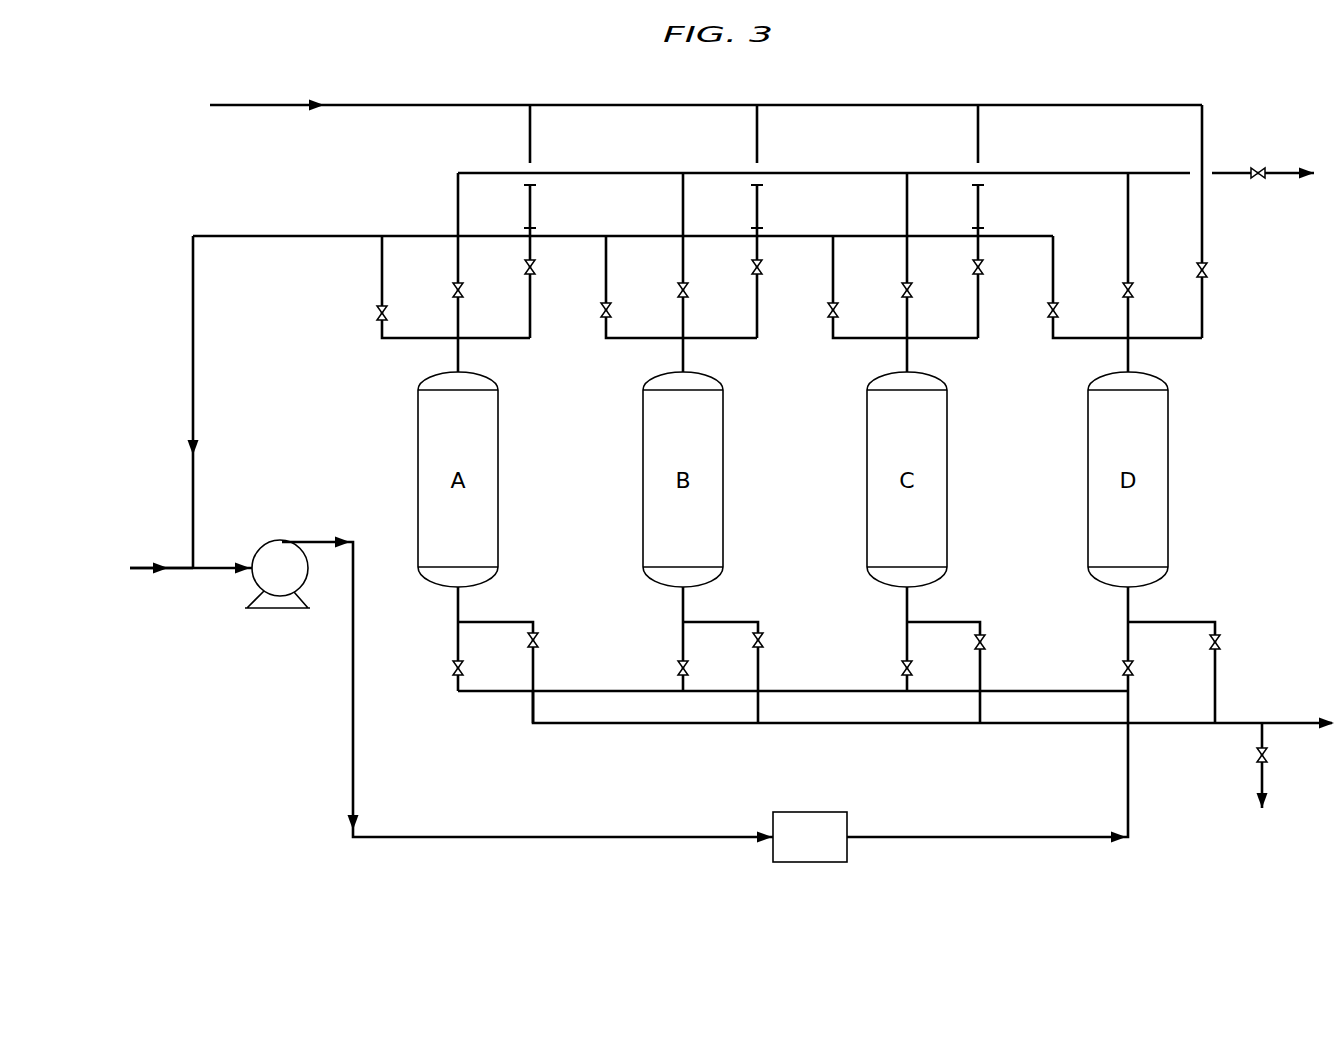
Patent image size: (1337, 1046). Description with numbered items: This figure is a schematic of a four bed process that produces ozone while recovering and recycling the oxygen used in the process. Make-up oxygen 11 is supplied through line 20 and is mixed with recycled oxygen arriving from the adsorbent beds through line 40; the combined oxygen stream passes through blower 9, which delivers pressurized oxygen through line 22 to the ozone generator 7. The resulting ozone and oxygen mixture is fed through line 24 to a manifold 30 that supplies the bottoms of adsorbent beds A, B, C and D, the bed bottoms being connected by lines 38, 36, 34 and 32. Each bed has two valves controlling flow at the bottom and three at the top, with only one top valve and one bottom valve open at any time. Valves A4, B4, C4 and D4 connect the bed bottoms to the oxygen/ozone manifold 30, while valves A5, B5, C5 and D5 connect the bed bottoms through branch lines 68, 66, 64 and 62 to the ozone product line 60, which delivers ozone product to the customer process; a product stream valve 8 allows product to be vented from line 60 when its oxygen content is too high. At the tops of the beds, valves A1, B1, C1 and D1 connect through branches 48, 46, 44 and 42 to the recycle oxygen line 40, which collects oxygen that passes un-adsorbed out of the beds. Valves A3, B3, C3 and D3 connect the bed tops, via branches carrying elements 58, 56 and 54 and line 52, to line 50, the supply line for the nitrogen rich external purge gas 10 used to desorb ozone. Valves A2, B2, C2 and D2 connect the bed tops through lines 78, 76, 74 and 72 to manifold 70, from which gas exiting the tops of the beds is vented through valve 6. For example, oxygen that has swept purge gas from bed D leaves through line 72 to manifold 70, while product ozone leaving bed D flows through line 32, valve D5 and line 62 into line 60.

The external purge gas 10 is at (335, 87).
The purge gas supply line 50 is at (880, 104).
The line 52 is at (1204, 213).
The manifold 70 is at (1073, 170).
The vent valve 6 is at (1264, 170).
The vent line vessel A 78 is at (457, 205).
The vent line vessel B 76 is at (682, 205).
The vent line vessel C 74 is at (906, 205).
The line 72 is at (1127, 205).
The purge restriction vessel A 58 is at (533, 210).
The purge restriction vessel B 56 is at (760, 210).
The purge restriction vessel C 54 is at (981, 210).
The recycle oxygen line 40 is at (192, 278).
The feed line vessel A 48 is at (381, 263).
The feed line vessel B 46 is at (607, 258).
The feed line vessel C 44 is at (834, 258).
The feed line vessel D 42 is at (1054, 248).
The valve A1 is at (400, 313).
The valve A2 is at (476, 304).
The valve A3 is at (550, 287).
The valve B1 is at (625, 310).
The valve B2 is at (701, 304).
The valve B3 is at (776, 287).
The valve C1 is at (851, 310).
The valve C2 is at (925, 304).
The valve C3 is at (996, 287).
The valve D1 is at (1071, 310).
The valve D2 is at (1147, 304).
The valve D3 is at (1220, 270).
The bottom line vessel A 38 is at (456, 607).
The bottom line vessel B 36 is at (681, 607).
The bottom line vessel C 34 is at (905, 607).
The line 32 is at (1126, 607).
The product branch vessel A 68 is at (514, 621).
The product branch vessel B 66 is at (738, 621).
The product branch vessel C 64 is at (961, 621).
The line 62 is at (1196, 621).
The valve A4 is at (477, 668).
The valve A5 is at (552, 640).
The valve B4 is at (702, 668).
The valve B5 is at (777, 640).
The valve C4 is at (926, 668).
The valve C5 is at (999, 642).
The valve D4 is at (1147, 668).
The valve D5 is at (1234, 642).
The manifold 30 is at (1079, 690).
The ozone product line 60 is at (619, 725).
The product stream valve 8 is at (1273, 781).
The line 24 is at (1126, 779).
The ozone generator 7 is at (790, 862).
The line 22 is at (351, 718).
The line 20 is at (184, 566).
The makeup oxygen 11 is at (157, 598).
The blower 9 is at (262, 546).